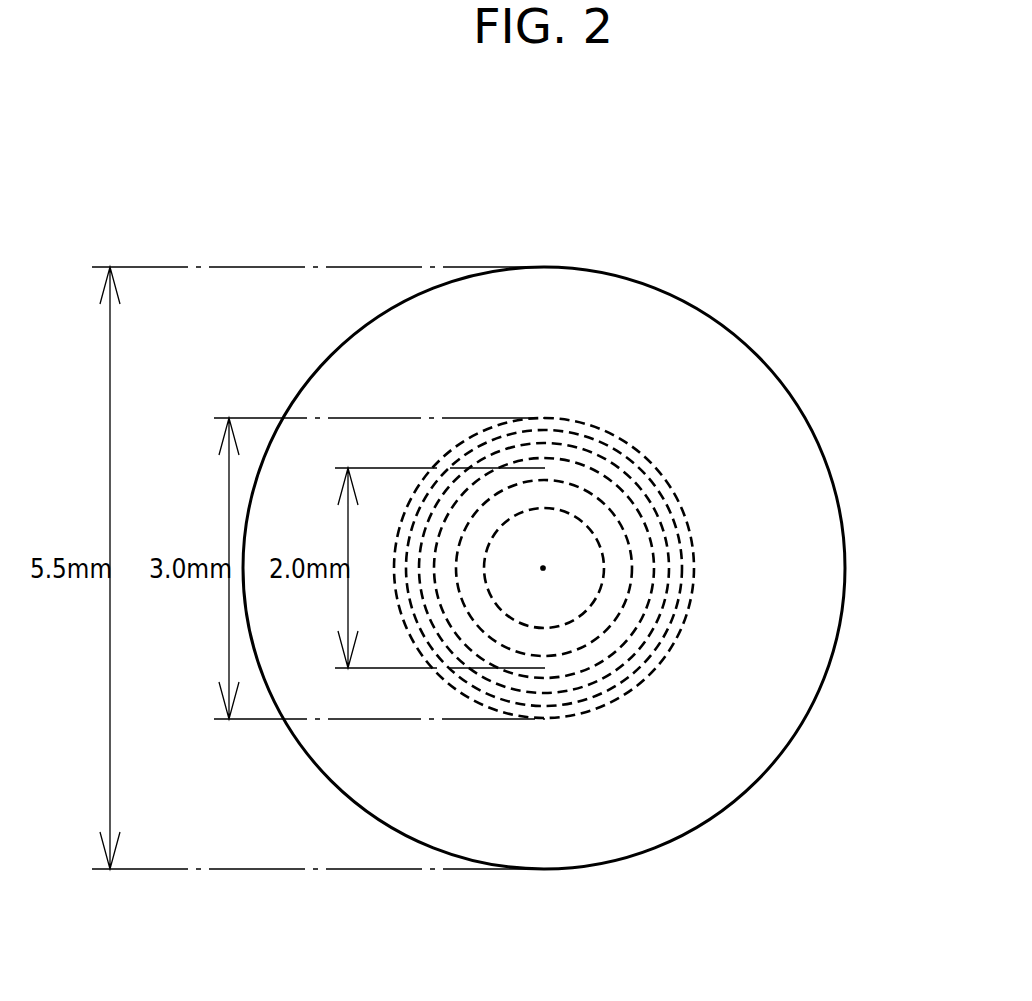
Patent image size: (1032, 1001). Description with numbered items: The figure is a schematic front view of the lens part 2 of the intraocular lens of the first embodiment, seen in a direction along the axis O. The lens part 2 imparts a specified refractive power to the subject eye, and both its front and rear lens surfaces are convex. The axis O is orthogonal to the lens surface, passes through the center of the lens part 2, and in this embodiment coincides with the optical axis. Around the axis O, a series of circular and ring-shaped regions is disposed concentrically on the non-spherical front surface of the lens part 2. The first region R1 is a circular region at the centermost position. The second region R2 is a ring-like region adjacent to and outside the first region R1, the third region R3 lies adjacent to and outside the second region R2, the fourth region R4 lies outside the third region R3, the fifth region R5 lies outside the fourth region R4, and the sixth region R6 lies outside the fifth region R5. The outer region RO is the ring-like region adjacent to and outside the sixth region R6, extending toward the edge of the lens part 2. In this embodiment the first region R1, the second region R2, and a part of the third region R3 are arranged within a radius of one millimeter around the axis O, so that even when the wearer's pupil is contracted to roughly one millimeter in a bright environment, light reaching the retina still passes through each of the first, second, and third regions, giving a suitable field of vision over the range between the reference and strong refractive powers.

The lens part 2 is at (529, 176).
The first region R1 is at (567, 547).
The second region R2 is at (608, 537).
The third region R3 is at (640, 555).
The fourth region R4 is at (660, 568).
The fifth region R5 is at (673, 587).
The sixth region R6 is at (675, 632).
The outer region RO is at (703, 733).
The axis O is at (543, 568).